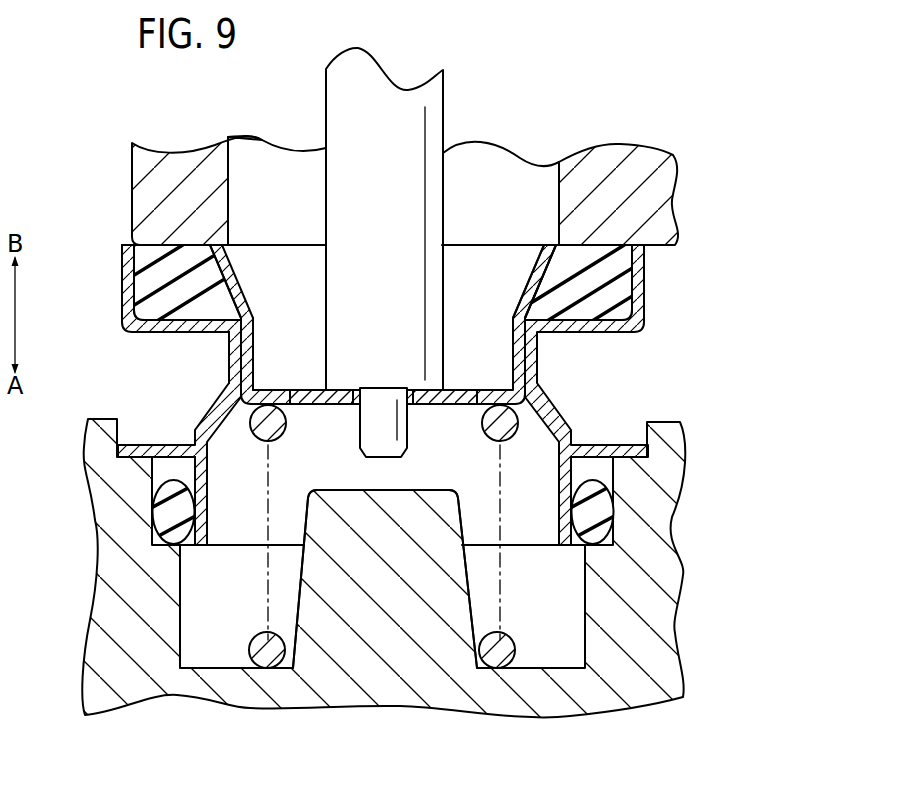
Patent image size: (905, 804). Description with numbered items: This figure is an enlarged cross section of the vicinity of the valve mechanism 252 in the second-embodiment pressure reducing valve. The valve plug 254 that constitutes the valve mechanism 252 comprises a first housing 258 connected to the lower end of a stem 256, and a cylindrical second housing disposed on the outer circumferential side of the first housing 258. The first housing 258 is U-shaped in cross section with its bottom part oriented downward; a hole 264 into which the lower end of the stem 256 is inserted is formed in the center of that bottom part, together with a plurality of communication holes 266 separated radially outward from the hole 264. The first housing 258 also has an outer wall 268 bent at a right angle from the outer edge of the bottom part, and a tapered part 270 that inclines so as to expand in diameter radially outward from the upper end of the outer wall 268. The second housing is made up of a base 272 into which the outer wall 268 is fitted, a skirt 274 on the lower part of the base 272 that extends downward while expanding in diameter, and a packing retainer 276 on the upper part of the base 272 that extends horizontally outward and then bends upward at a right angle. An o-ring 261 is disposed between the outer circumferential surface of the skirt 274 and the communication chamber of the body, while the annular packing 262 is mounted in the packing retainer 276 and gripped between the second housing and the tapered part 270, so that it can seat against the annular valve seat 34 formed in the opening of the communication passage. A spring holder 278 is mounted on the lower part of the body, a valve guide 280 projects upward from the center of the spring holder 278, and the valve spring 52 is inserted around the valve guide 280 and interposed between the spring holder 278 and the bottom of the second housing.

The valve seat 34 is at (148, 270).
The valve spring 52 is at (507, 670).
The valve mechanism 252 is at (468, 117).
The valve plug 254 is at (654, 278).
The stem 256 is at (382, 82).
The first housing 258 is at (247, 282).
The o-ring 261 is at (160, 520).
The packing 262 is at (596, 300).
The hole 264 is at (367, 395).
The communication holes 266 is at (314, 396).
The outer wall 268 is at (258, 352).
The tapered part 270 is at (540, 285).
The base 272 is at (233, 365).
The skirt 274 is at (208, 523).
The packing retainer 276 is at (148, 332).
The spring holder 278 is at (682, 522).
The valve guide 280 is at (437, 490).